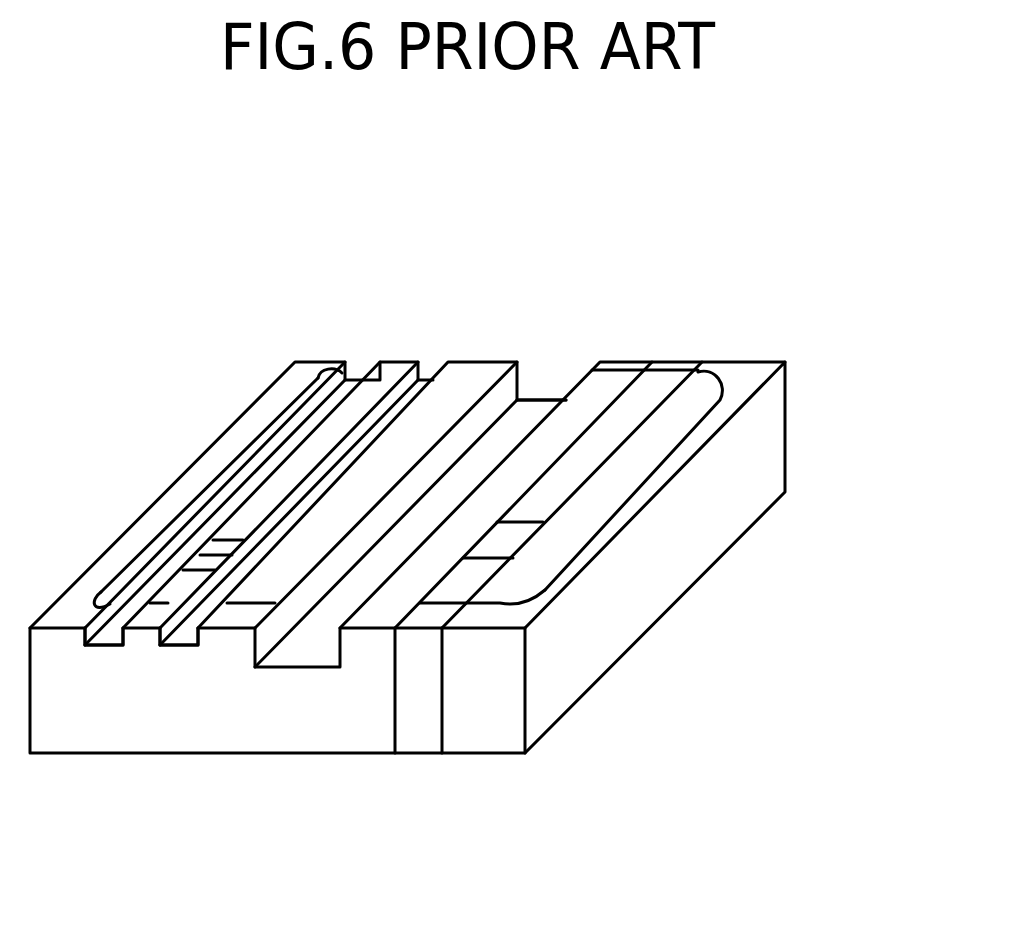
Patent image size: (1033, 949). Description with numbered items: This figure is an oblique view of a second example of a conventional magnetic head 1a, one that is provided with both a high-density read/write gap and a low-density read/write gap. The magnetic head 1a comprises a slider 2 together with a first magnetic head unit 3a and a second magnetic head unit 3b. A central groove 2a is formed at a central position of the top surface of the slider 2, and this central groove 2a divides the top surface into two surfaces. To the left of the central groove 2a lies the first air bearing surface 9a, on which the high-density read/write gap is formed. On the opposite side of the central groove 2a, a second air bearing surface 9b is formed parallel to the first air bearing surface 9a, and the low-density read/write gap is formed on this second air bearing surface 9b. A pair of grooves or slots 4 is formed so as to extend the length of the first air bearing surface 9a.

The magnetic head 1a is at (154, 281).
The slider 2 is at (802, 470).
The central groove 2a is at (533, 410).
The first magnetic head unit 3a is at (215, 547).
The second magnetic head unit 3b is at (512, 536).
The grooves or slots 4 is at (110, 643).
The first air bearing surface 9a is at (307, 450).
The second air bearing surface 9b is at (573, 467).